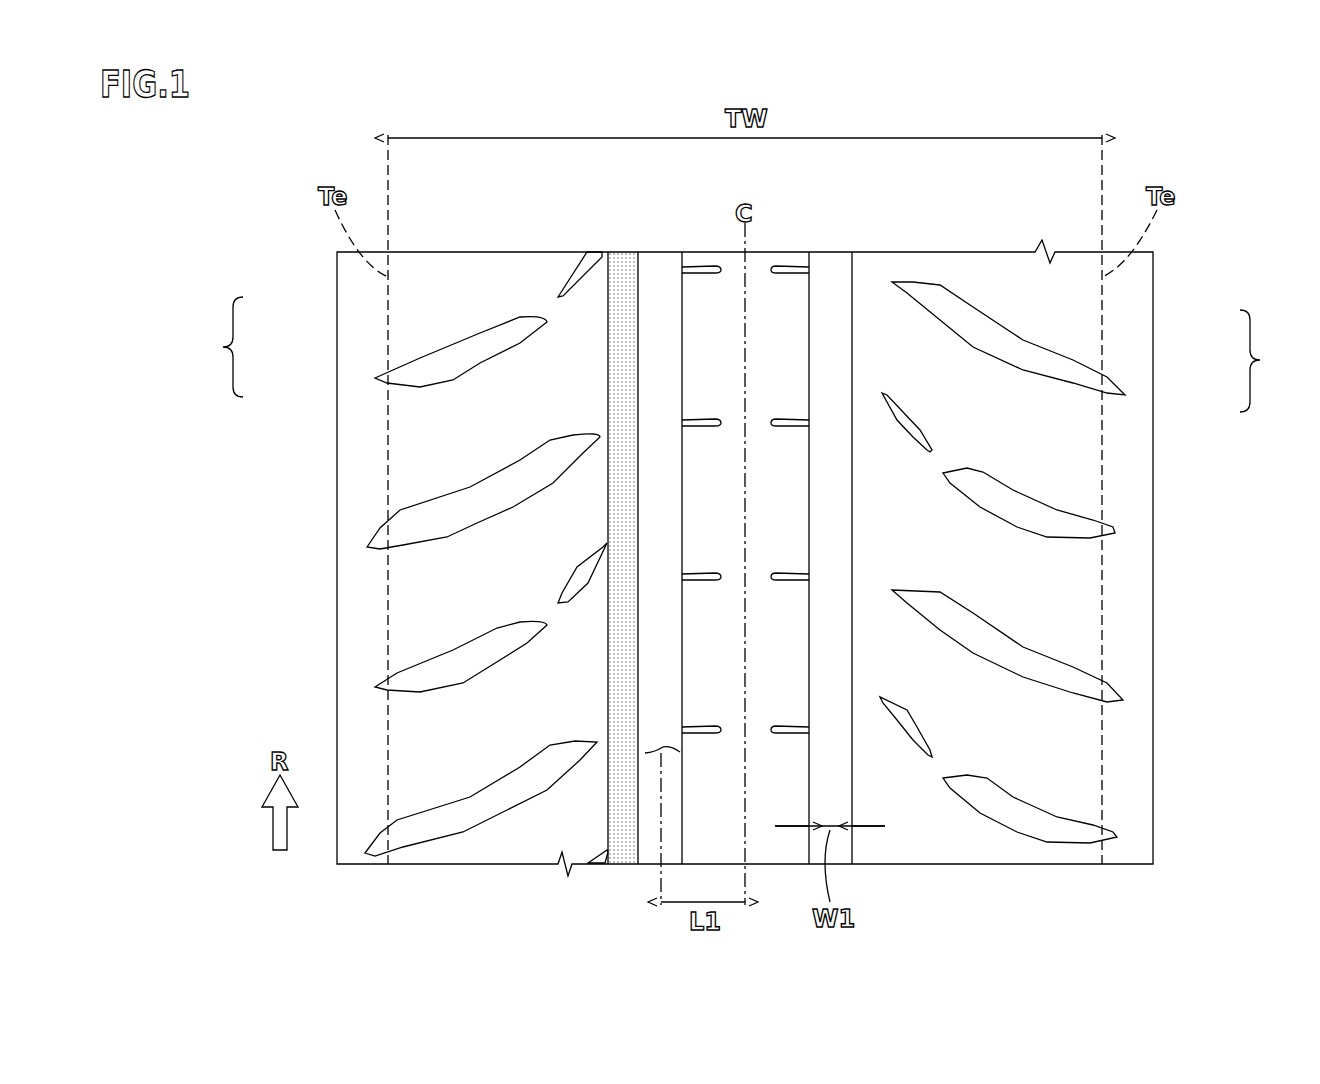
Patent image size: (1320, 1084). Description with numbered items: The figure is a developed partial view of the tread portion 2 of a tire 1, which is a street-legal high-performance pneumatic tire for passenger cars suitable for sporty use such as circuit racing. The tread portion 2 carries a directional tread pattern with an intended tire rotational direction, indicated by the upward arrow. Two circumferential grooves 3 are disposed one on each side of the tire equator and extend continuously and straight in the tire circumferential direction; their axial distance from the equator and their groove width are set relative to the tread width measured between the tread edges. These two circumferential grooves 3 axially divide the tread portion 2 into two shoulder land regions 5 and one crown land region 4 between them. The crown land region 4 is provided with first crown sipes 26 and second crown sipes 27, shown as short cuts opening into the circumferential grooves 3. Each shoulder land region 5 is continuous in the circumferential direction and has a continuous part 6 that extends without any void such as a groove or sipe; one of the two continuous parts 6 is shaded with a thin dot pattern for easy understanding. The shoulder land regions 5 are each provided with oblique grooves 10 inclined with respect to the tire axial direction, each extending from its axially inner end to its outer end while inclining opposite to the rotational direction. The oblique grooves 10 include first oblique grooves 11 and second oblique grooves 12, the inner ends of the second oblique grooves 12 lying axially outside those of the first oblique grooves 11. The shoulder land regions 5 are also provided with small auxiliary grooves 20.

The tire 1 is at (930, 230).
The tread portion 2 is at (556, 231).
The circumferential groove 3 is at (659, 285).
The crown land region 4 is at (714, 300).
The shoulder land region 5 is at (479, 285).
The continuous part 6 is at (627, 341).
The oblique groove 10 is at (746, 354).
The first oblique groove 11 is at (490, 500).
The second oblique groove 12 is at (460, 361).
The auxiliary groove 20 is at (578, 580).
The first crown sipe 26 is at (698, 575).
The second crown sipe 27 is at (792, 575).